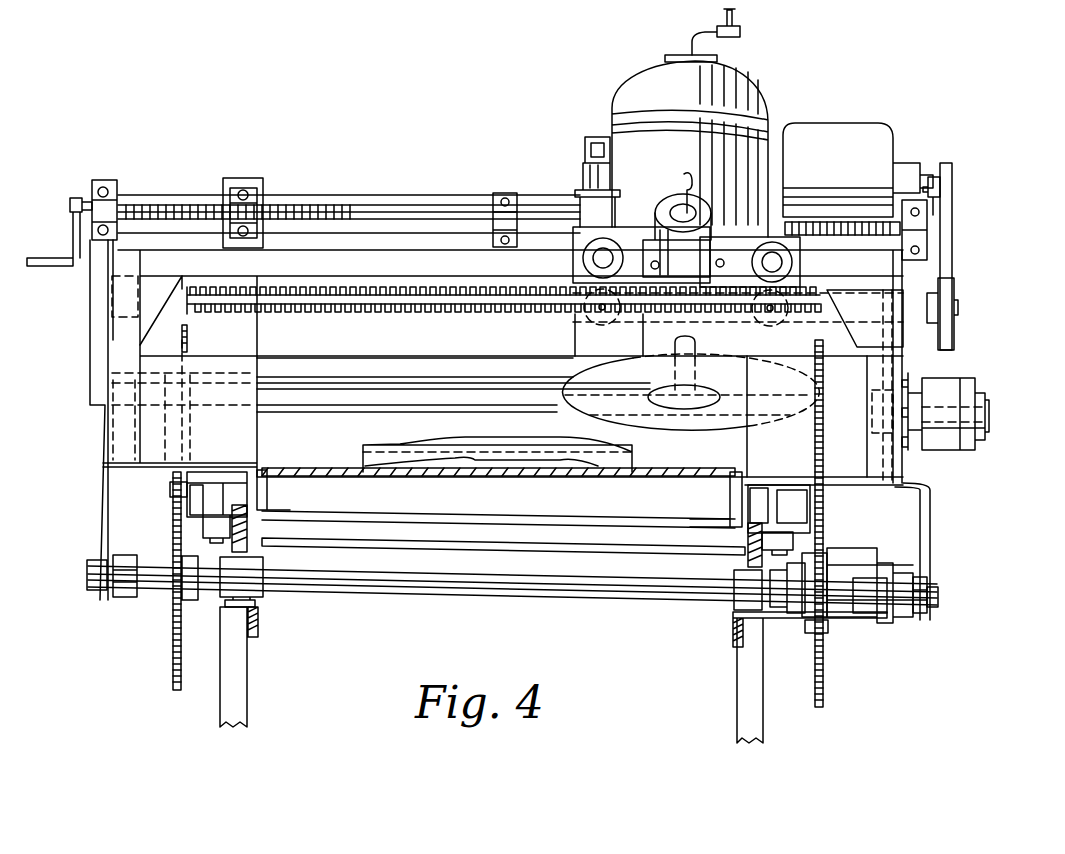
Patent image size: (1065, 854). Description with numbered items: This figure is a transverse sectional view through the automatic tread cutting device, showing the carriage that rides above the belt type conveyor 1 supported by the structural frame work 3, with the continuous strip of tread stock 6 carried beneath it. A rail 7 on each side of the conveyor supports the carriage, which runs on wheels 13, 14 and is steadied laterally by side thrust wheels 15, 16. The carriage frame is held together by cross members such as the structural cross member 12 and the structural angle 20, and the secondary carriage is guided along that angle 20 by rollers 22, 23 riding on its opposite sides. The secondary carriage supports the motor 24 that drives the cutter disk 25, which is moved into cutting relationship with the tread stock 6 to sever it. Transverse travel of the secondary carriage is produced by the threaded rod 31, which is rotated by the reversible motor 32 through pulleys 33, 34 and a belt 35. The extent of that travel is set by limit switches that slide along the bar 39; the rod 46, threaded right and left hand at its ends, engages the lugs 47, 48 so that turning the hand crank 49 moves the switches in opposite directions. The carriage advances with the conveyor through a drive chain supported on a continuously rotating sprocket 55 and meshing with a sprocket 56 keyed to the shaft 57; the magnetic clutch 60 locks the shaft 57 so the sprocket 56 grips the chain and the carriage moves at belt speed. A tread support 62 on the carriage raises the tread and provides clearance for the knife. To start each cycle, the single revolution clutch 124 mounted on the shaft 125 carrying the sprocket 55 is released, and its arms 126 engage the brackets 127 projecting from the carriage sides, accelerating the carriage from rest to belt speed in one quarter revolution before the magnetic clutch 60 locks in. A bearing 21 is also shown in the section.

The belt type conveyor 1 is at (371, 475).
The structural frame work 3 is at (233, 695).
The tread stock 6 is at (608, 458).
The rail 7 is at (207, 563).
The structural cross member 12 is at (363, 267).
The wheel 13 is at (240, 510).
The wheel 14 is at (758, 515).
The side thrust wheel 15 is at (203, 530).
The side thrust wheel 16 is at (800, 540).
The structural angle 20 is at (437, 285).
The frame member 21 is at (397, 360).
The roller 22 is at (582, 252).
The roller 23 is at (590, 318).
The motor 24 is at (625, 108).
The cutter disk 25 is at (673, 428).
The threaded rod 31 is at (325, 316).
The reversible motor 32 is at (838, 133).
The pulley 33 is at (953, 178).
The pulley 34 is at (952, 293).
The belt 35 is at (950, 243).
The bar 39 is at (298, 205).
The rod 46 is at (180, 215).
The lug 47 is at (247, 210).
The lug 48 is at (812, 212).
The hand crank 49 is at (73, 245).
The sprocket 55 is at (170, 640).
The sprocket 56 is at (190, 335).
The shaft 57 is at (420, 398).
The magnetic clutch 60 is at (938, 448).
The tread support 62 is at (333, 455).
The single revolution clutch 124 is at (863, 558).
The shaft 125 is at (938, 595).
The arm 126 is at (100, 557).
The bracket 127 is at (102, 500).